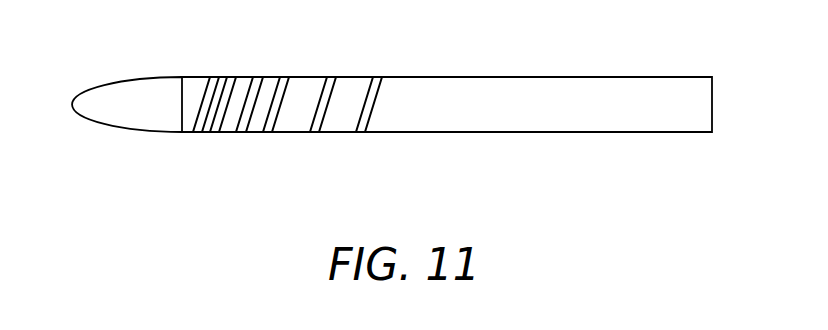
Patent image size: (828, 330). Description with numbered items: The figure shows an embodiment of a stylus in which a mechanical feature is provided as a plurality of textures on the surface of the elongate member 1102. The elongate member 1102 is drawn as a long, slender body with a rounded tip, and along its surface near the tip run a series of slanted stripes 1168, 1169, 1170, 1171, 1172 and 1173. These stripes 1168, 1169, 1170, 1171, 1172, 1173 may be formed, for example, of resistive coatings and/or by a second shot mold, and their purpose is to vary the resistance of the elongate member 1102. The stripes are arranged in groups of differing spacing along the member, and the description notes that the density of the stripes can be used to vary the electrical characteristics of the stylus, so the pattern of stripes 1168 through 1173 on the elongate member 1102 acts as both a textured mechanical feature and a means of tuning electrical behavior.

The elongate member 1102 is at (624, 77).
The stripe 1168 is at (194, 132).
The stripe 1169 is at (234, 77).
The stripe 1170 is at (243, 132).
The stripe 1171 is at (288, 77).
The stripe 1172 is at (314, 132).
The stripe 1173 is at (379, 77).